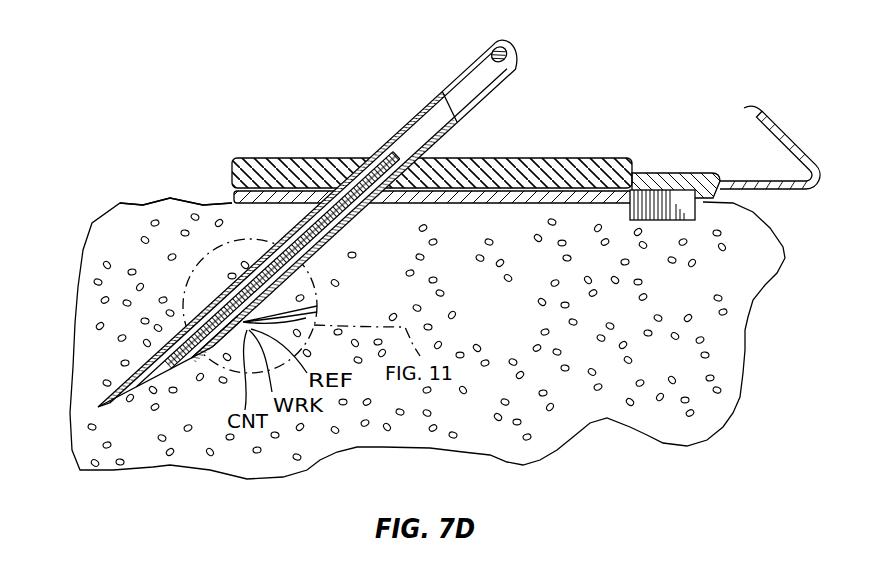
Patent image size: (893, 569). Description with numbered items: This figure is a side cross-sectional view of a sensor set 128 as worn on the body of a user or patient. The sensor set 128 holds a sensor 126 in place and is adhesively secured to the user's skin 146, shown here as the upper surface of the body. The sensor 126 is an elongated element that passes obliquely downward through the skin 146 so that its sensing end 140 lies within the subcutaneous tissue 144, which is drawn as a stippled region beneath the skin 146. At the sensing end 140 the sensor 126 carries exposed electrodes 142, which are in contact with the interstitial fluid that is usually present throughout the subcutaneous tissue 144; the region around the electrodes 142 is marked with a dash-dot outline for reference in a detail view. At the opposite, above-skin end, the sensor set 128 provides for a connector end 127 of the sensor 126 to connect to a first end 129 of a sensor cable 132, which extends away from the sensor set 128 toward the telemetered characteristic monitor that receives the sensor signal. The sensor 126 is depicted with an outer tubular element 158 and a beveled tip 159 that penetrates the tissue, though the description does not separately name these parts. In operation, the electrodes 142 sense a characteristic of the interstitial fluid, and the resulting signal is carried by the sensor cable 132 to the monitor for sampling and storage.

The sensor 126 is at (355, 234).
The connector end 127 is at (646, 178).
The sensor set 128 is at (307, 104).
The first end 129 is at (774, 196).
The sensor cable 132 is at (784, 130).
The sensing end 140 is at (212, 348).
The exposed electrodes 142 is at (319, 323).
The subcutaneous tissue 144 is at (132, 243).
The skin 146 is at (168, 203).
The sheath 158 is at (475, 59).
The needle tip 159 is at (98, 409).